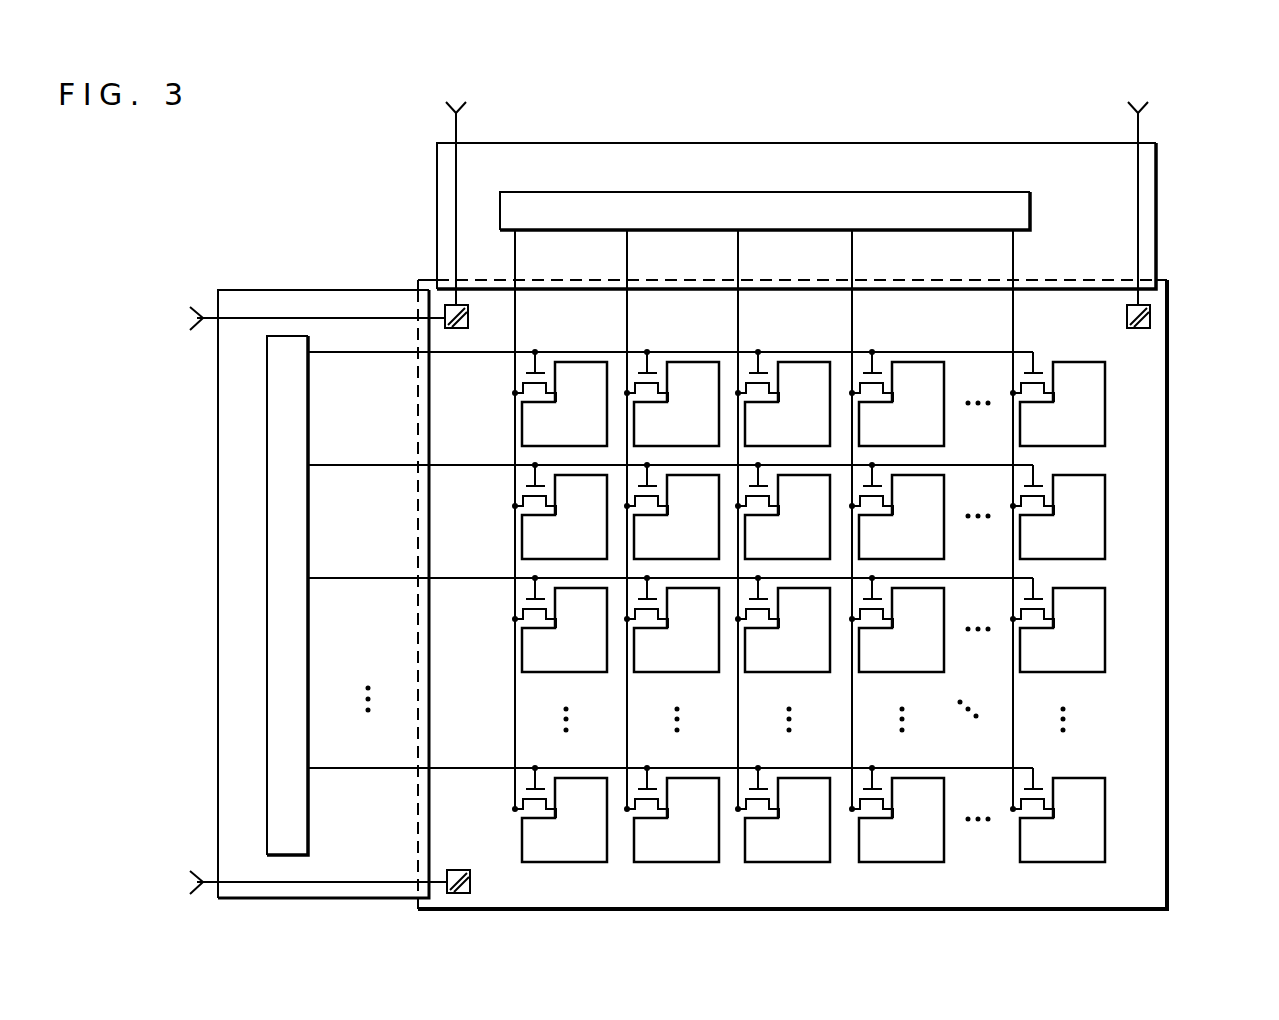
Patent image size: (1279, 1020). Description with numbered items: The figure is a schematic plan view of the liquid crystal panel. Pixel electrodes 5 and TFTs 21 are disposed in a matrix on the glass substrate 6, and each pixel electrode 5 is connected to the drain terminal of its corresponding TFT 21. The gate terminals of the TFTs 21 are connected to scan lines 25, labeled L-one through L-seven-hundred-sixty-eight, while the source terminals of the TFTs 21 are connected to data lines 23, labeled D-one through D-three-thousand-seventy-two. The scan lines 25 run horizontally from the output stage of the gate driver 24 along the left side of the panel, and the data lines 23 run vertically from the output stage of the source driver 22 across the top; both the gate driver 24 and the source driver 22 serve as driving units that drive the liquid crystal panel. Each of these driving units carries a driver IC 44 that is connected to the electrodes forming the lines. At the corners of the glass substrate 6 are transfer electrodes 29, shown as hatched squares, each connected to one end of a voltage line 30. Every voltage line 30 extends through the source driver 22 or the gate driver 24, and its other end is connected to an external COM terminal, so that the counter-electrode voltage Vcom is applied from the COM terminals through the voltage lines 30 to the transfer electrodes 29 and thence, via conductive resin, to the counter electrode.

The pixel electrode 5 is at (1095, 514).
The glass substrate 6 is at (1145, 698).
The TFT 21 is at (1040, 476).
The source driver 22 is at (783, 143).
The data line 23 is at (1045, 318).
The gate driver 24 is at (218, 567).
The scan line 25 is at (468, 803).
The transfer electrode 29 is at (445, 310).
The voltage line 30 is at (456, 214).
The driver IC 44 is at (955, 192).